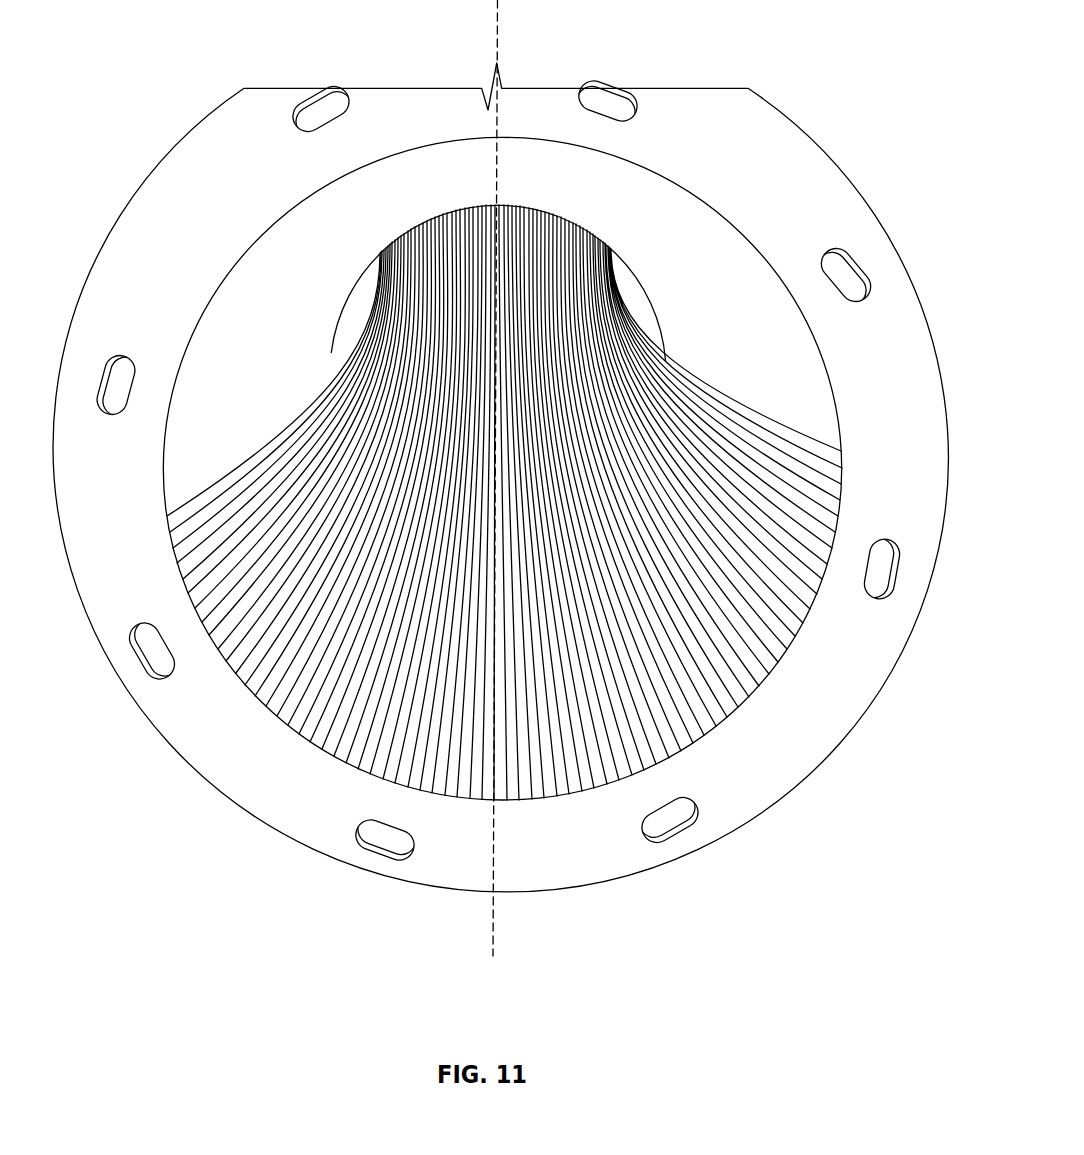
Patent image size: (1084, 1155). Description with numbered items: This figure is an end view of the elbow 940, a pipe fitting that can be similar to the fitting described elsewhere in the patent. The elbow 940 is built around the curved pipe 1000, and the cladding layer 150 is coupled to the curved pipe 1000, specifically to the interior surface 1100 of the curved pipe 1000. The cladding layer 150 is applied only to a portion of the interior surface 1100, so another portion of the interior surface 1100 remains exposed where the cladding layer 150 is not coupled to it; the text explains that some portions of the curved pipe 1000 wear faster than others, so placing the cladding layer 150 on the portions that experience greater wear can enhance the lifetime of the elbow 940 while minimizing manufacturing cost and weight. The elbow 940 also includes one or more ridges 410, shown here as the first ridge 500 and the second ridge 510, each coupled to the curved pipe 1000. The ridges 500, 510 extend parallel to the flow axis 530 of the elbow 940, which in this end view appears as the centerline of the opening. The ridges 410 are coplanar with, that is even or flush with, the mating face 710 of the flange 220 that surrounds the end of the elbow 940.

The elbow 940 is at (840, 37).
The cladding layer 150 is at (254, 310).
The interior surface 1100 is at (768, 308).
The curved pipe 1000 is at (643, 286).
The ridges 410 is at (301, 396).
The second ridge 510 is at (267, 462).
The first ridge 500 is at (217, 488).
The flange 220 is at (220, 773).
The mating face 710 is at (284, 805).
The flow axis 530 is at (492, 921).